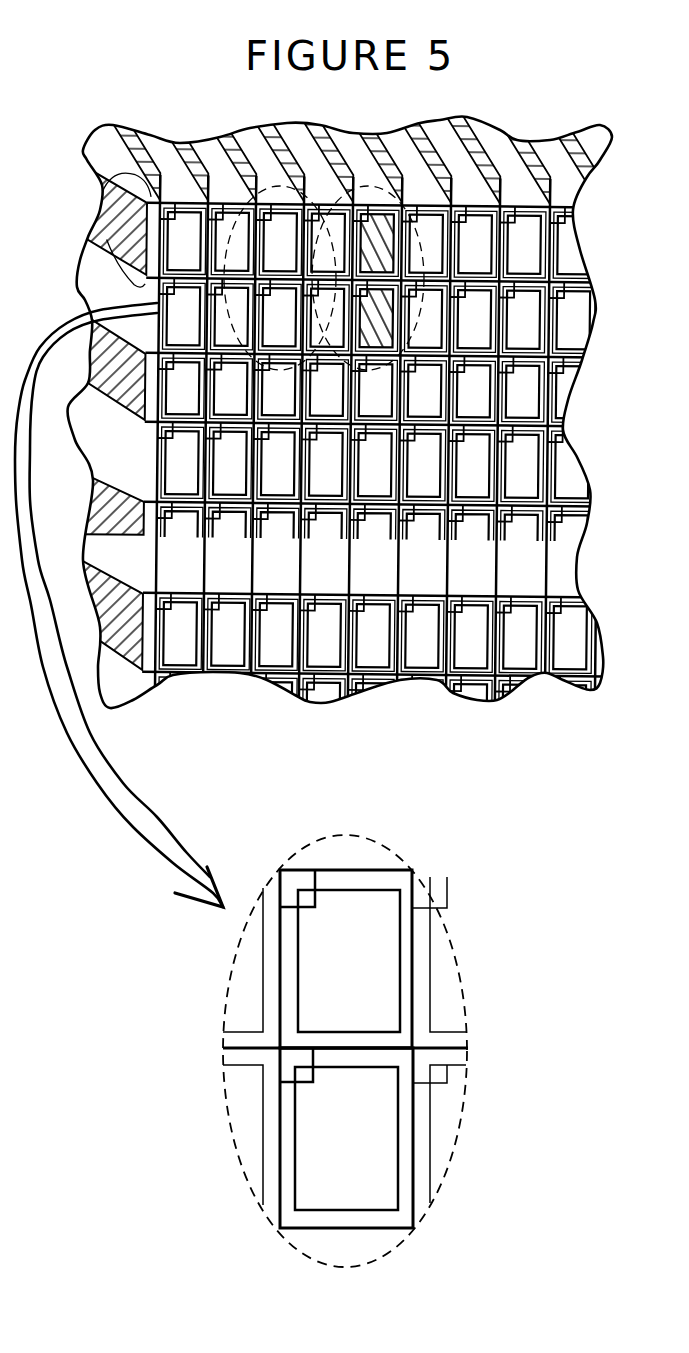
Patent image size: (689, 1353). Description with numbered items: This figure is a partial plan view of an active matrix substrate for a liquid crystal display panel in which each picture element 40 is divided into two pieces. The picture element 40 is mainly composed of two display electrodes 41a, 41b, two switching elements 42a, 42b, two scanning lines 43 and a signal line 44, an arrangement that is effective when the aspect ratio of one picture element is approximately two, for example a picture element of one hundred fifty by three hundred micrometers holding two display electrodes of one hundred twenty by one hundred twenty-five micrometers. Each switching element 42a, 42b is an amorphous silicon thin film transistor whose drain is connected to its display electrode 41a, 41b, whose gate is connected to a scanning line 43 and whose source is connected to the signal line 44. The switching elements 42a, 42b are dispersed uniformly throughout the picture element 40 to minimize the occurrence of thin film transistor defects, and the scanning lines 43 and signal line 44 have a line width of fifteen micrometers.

The picture element 40 is at (378, 200).
The display electrode 41a is at (349, 961).
The display electrode 41b is at (346, 1138).
The switching element 42a is at (316, 898).
The switching element 42b is at (316, 1073).
The scanning line 43 is at (102, 193).
The signal line 44 is at (252, 160).